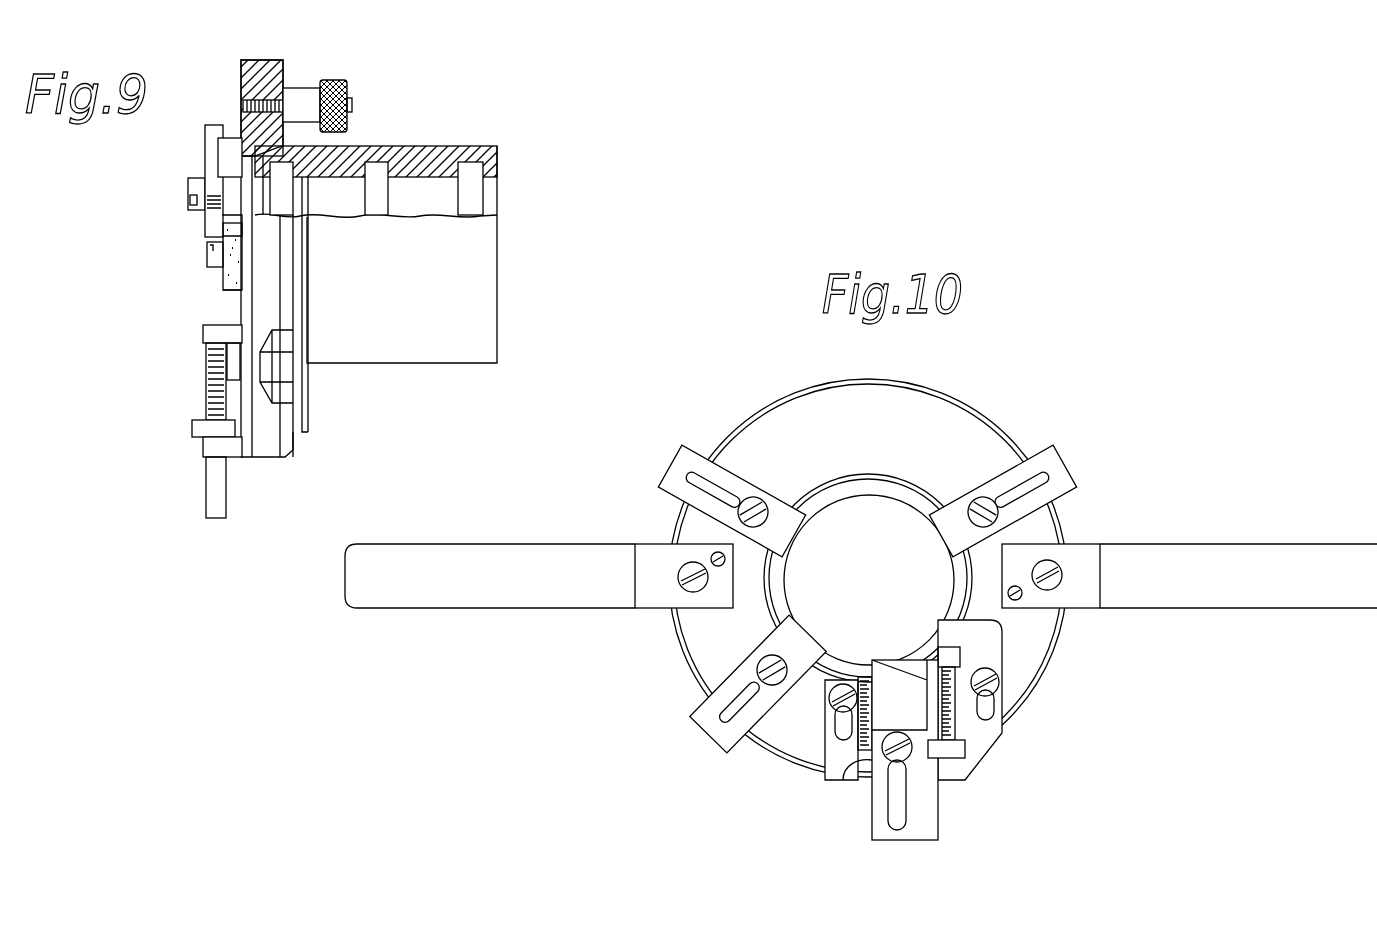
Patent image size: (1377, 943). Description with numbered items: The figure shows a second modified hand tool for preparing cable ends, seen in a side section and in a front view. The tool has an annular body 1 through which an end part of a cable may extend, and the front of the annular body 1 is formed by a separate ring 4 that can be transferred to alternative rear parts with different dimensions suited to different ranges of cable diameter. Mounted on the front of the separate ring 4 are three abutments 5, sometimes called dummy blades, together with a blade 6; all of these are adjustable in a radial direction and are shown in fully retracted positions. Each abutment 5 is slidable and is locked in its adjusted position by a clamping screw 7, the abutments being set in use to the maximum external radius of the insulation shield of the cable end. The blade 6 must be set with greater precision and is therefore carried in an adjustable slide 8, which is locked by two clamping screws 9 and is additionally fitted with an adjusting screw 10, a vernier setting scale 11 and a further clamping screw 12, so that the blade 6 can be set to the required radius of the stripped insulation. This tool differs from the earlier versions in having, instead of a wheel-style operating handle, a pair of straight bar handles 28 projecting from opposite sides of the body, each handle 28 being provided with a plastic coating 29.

In FIG. 9, the annular body 1 is at (432, 156).
In FIG. 10, the annular body 1 is at (882, 485).
In FIG. 9, the separate ring 4 is at (270, 70).
In FIG. 10, the separate ring 4 is at (958, 438).
In FIG. 9, the abutments 5 is at (213, 218).
In FIG. 10, the abutments 5 is at (668, 470).
In FIG. 9, the blade 6 is at (212, 487).
In FIG. 10, the blade 6 is at (878, 840).
In FIG. 9, the clamping screws 7 is at (188, 188).
In FIG. 10, the clamping screws 7 is at (938, 517).
In FIG. 10, the adjustable slide 8 is at (973, 653).
In FIG. 9, the clamping screws 9 is at (230, 368).
In FIG. 10, the clamping screws 9 is at (847, 677).
In FIG. 9, the adjusting screw 10 is at (200, 426).
In FIG. 10, the adjusting screw 10 is at (963, 745).
In FIG. 10, the vernier setting scale 11 is at (847, 770).
In FIG. 10, the clamping screw 12 is at (907, 753).
In FIG. 9, the straight bar handles 28 is at (220, 279).
In FIG. 10, the straight bar handles 28 is at (425, 544).
In FIG. 9, the plastic coating 29 is at (220, 291).
In FIG. 10, the plastic coating 29 is at (518, 576).